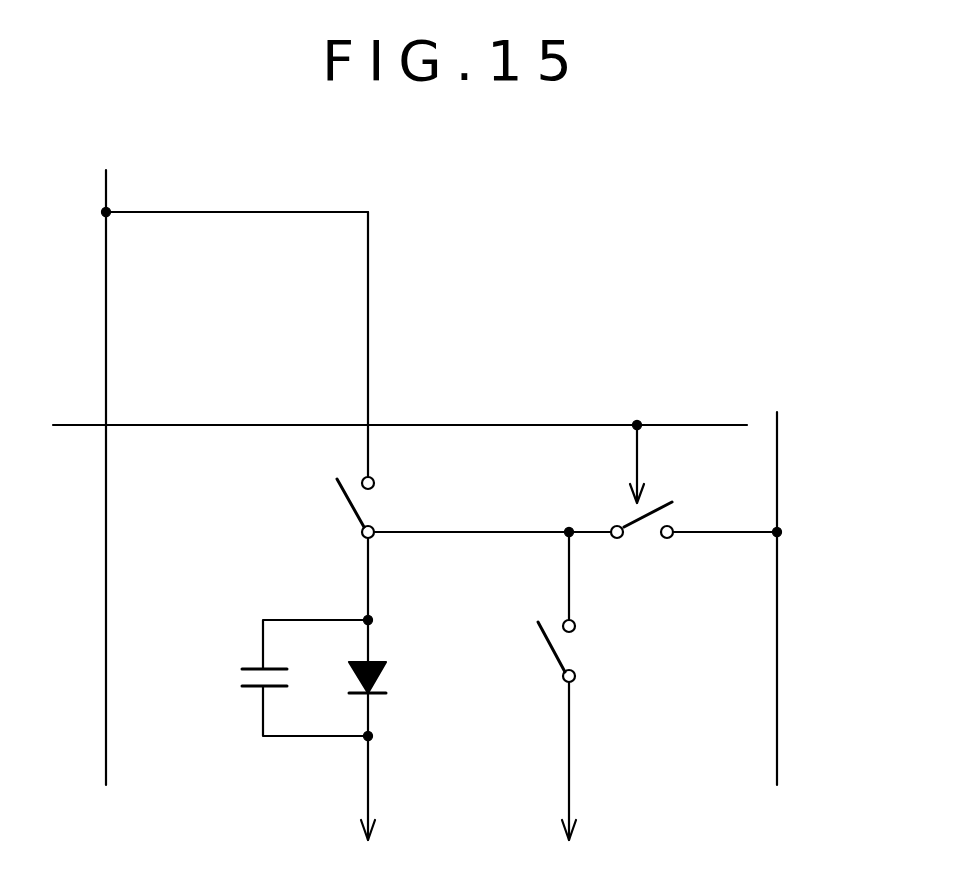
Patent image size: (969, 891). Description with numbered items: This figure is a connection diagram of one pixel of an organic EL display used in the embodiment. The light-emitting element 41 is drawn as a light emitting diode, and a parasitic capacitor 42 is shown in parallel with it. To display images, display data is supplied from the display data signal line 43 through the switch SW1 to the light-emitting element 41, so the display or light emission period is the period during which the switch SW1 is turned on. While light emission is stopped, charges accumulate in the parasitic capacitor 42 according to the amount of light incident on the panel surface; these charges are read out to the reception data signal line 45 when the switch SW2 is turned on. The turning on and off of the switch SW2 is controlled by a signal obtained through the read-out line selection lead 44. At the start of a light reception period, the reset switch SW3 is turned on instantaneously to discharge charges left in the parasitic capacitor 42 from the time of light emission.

The light-emitting element 41 is at (392, 681).
The parasitic capacitor 42 is at (245, 679).
The display data signal line 43 is at (103, 712).
The read-out line selection lead 44 is at (676, 421).
The reception data signal line 45 is at (780, 752).
The switch SW1 is at (366, 508).
The switch SW2 is at (643, 540).
The reset switch SW3 is at (566, 650).